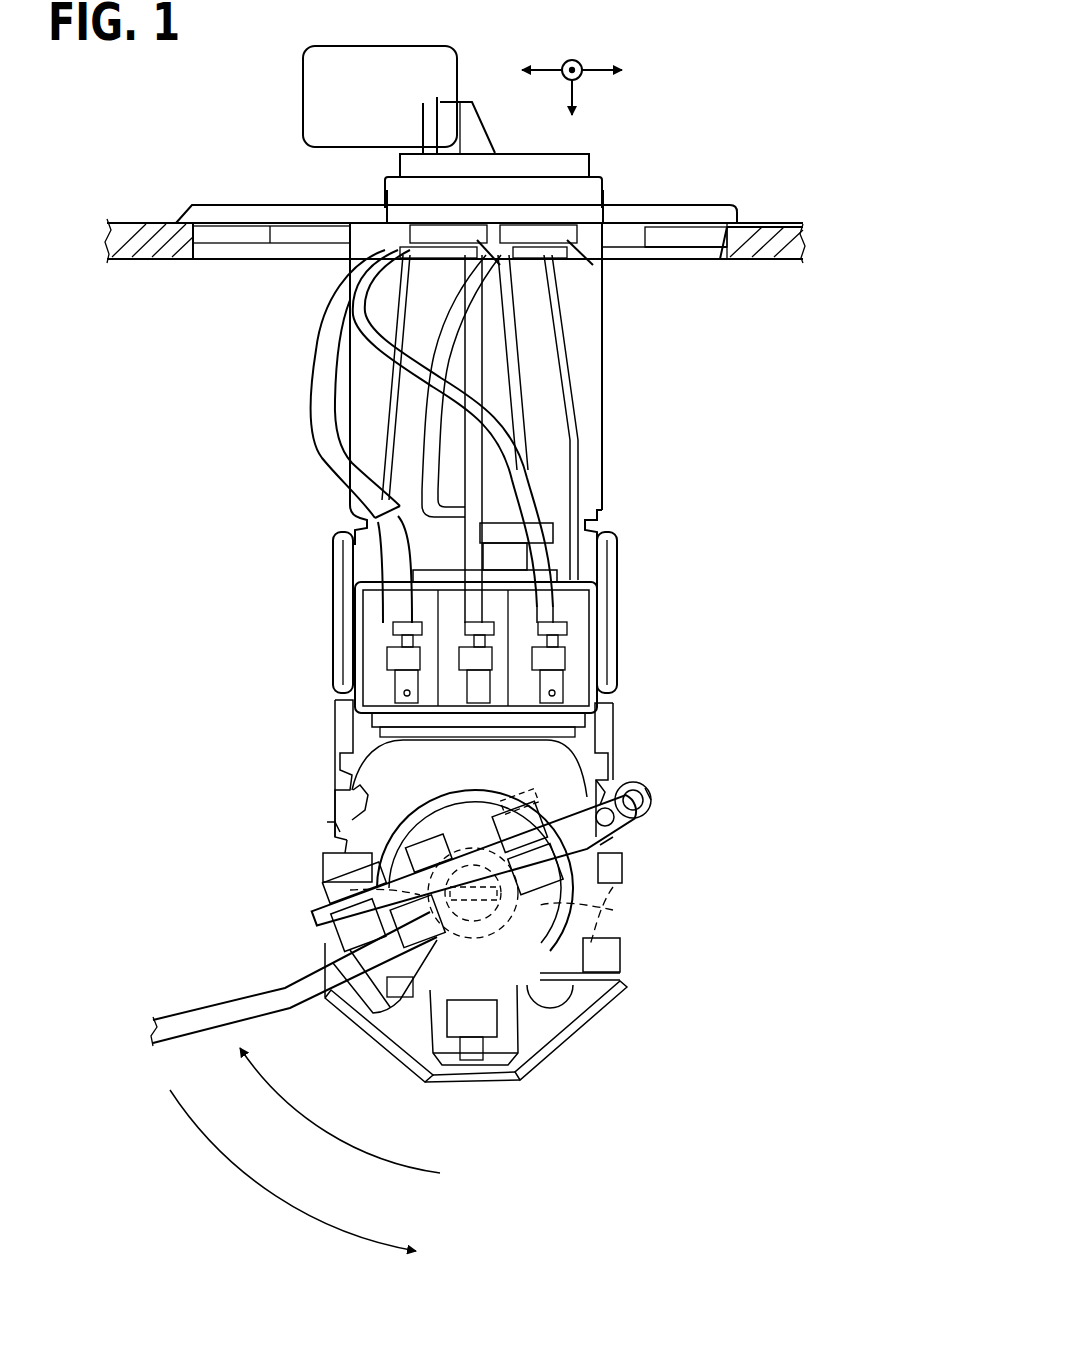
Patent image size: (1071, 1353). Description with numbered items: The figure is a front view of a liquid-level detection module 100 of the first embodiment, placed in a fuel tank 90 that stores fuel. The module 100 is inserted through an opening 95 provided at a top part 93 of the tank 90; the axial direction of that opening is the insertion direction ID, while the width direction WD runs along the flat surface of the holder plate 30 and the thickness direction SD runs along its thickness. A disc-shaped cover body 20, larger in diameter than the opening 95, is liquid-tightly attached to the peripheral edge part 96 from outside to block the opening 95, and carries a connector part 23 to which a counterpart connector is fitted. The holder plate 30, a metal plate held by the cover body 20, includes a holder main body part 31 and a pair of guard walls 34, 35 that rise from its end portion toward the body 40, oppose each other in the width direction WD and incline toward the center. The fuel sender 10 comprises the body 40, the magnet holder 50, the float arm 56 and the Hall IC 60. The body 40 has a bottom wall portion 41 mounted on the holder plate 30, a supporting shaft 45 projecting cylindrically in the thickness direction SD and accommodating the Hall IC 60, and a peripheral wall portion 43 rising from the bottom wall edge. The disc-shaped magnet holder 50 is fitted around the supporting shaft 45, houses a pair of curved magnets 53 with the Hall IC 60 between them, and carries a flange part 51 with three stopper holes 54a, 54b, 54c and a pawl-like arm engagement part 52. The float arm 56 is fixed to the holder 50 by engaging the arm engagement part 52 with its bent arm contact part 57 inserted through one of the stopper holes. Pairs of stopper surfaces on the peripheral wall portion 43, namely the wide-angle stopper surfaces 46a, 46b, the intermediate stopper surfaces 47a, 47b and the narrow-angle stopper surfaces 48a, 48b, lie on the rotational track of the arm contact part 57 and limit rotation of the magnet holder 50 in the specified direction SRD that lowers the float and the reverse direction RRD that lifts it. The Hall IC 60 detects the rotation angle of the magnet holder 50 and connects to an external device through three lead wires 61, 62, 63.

The liquid-level detection module 100 is at (800, 32).
The connector part 23 is at (425, 46).
The cover body 20 is at (684, 230).
The peripheral edge part 96 is at (738, 222).
The fuel tank 90 is at (773, 230).
The opening 95 is at (720, 260).
The top part 93 is at (776, 260).
The holder plate 30 is at (605, 313).
The holder main body part 31 is at (580, 387).
The fuel sender 10 is at (586, 569).
The lead wire 61 is at (353, 313).
The lead wire 62 is at (427, 407).
The lead wire 63 is at (310, 387).
The body 40 is at (587, 703).
The peripheral wall portion 43 is at (373, 583).
The narrow-angle stopper surface 48a is at (380, 717).
The narrow-angle stopper surface 48b is at (610, 678).
The bottom wall portion 41 is at (390, 777).
The intermediate stopper surface 47a is at (347, 797).
The intermediate stopper surface 47b is at (613, 785).
The supporting shaft 45 is at (327, 822).
The wide-angle stopper surface 46a is at (347, 840).
The wide-angle stopper surface 46b is at (613, 887).
The magnet holder 50 is at (600, 762).
The arm contact part 57 is at (640, 790).
The flange part 51 is at (650, 790).
The stopper hole 54c is at (637, 802).
The stopper hole 54b is at (643, 820).
The stopper hole 54a is at (613, 837).
The magnet 53 is at (350, 890).
The Hall IC 60 is at (310, 927).
The float arm 56 is at (212, 1032).
The guard wall 34 is at (385, 1048).
The guard wall 35 is at (583, 1030).
The arm engagement part 52 is at (428, 1060).
The thickness direction SD is at (572, 60).
The width direction WD is at (596, 62).
The insertion direction ID is at (580, 88).
The reverse direction RRD is at (332, 1137).
The specified direction SRD is at (243, 1175).